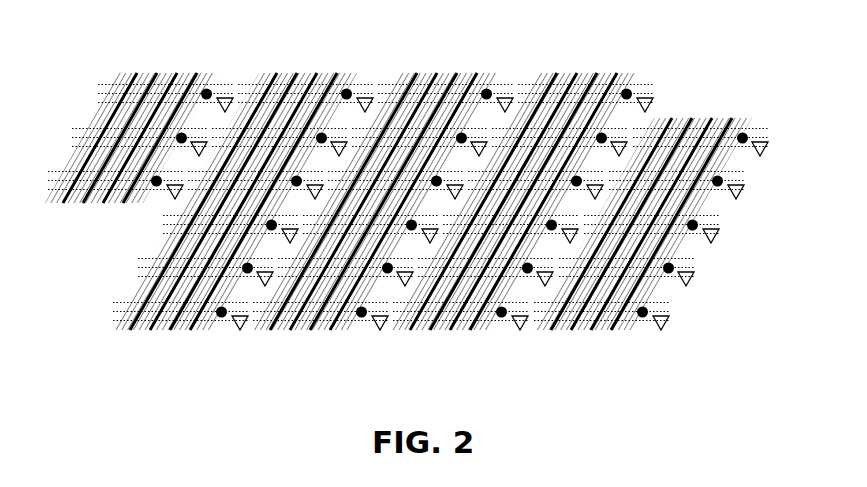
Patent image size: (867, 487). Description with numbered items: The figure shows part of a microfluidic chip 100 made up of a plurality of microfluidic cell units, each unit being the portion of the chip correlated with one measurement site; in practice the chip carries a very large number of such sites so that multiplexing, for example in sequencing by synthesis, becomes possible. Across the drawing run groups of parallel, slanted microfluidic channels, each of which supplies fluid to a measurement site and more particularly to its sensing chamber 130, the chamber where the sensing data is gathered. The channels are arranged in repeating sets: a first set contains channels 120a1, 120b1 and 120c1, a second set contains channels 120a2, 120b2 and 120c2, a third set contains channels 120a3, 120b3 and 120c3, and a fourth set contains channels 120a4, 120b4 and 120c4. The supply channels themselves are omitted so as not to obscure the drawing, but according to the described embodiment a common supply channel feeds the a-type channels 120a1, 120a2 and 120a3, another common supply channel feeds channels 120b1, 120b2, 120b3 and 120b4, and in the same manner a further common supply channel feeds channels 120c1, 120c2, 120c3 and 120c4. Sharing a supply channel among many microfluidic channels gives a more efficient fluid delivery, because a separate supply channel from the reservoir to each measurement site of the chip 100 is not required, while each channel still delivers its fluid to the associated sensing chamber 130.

The microfluidic chip 100 is at (120, 53).
The sensing chamber 130 is at (636, 93).
The microfluidic channel 120a1 is at (128, 329).
The microfluidic channel 120b1 is at (148, 329).
The microfluidic channel 120c1 is at (168, 329).
The microfluidic channel 120a2 is at (270, 329).
The microfluidic channel 120b2 is at (290, 329).
The microfluidic channel 120c2 is at (309, 329).
The microfluidic channel 120a3 is at (407, 328).
The microfluidic channel 120b3 is at (428, 329).
The microfluidic channel 120c3 is at (449, 329).
The microfluidic channel 120a4 is at (550, 329).
The microfluidic channel 120b4 is at (570, 329).
The microfluidic channel 120c4 is at (592, 329).